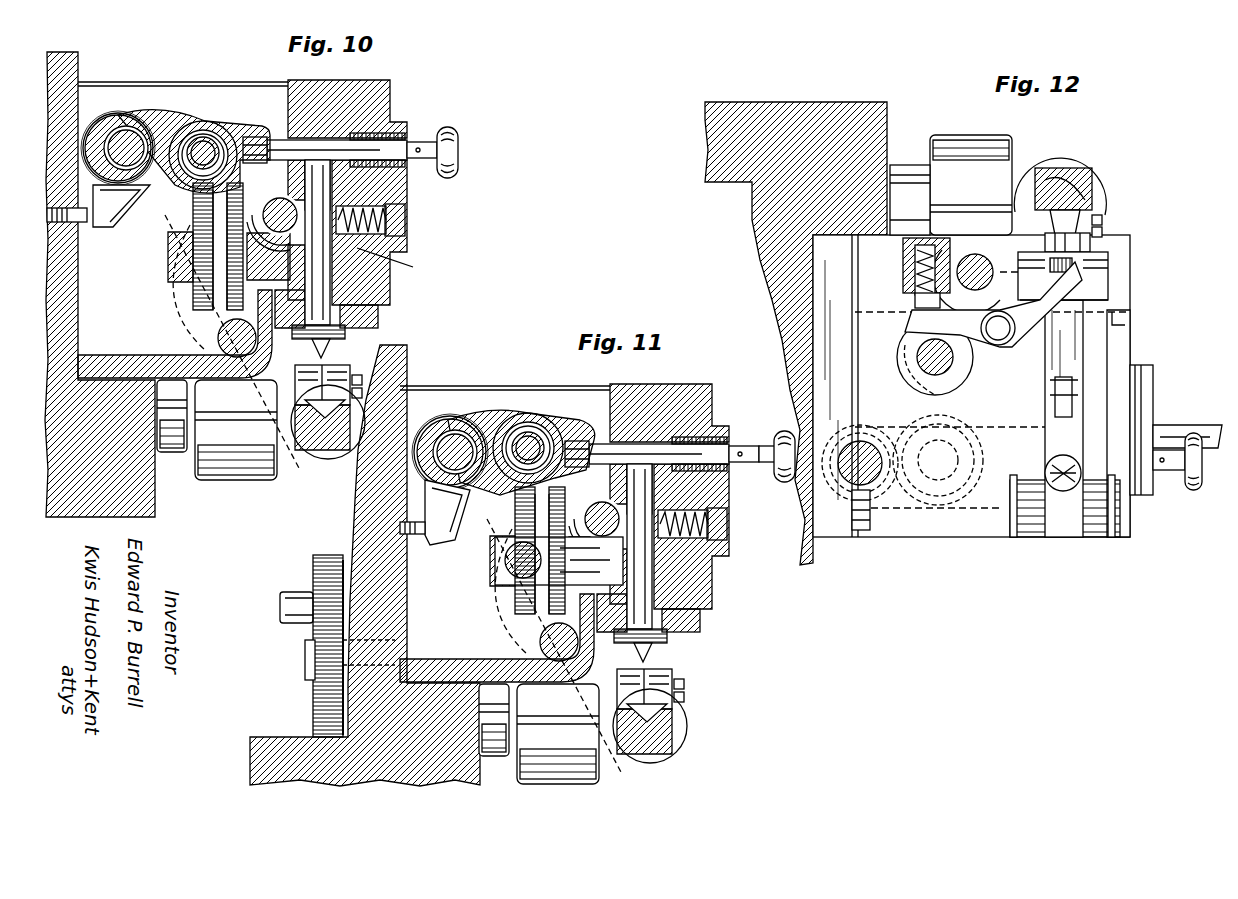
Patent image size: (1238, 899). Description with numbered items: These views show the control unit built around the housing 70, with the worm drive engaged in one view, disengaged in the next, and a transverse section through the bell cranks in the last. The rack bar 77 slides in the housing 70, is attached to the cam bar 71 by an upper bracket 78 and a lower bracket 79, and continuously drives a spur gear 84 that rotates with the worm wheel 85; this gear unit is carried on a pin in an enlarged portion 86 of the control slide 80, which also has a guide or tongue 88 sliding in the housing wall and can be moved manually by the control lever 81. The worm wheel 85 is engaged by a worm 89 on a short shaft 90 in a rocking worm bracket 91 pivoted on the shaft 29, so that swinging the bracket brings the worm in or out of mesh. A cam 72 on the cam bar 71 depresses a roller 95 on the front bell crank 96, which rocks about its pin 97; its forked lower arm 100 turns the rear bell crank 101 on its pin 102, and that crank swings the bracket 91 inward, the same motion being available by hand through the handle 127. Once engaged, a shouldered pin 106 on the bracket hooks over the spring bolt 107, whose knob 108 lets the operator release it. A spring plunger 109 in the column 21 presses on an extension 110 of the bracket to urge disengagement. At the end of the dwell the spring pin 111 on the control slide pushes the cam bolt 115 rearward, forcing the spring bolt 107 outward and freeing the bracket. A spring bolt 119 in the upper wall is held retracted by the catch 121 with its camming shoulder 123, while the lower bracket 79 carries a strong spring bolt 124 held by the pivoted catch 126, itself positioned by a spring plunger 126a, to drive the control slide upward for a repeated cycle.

In FIG. 10, the column 21 is at (150, 505).
In FIG. 11, the column 21 is at (365, 500).
In FIG. 12, the column 21 is at (878, 128).
In FIG. 10, the shaft 29 is at (105, 128).
In FIG. 11, the shaft 29 is at (440, 435).
In FIG. 12, the shaft 29 is at (870, 490).
In FIG. 10, the housing 70 is at (385, 98).
In FIG. 11, the housing 70 is at (668, 390).
In FIG. 12, the housing 70 is at (1118, 345).
In FIG. 10, the cam bar 71 is at (303, 455).
In FIG. 11, the cam bar 71 is at (685, 752).
In FIG. 12, the cam bar 71 is at (1092, 175).
In FIG. 12, the cam 72 is at (1100, 215).
In FIG. 10, the rack bar 77 is at (218, 340).
In FIG. 11, the rack bar 77 is at (540, 650).
In FIG. 12, the rack bar 77 is at (972, 255).
In FIG. 12, the bracket 78 is at (1062, 162).
In FIG. 10, the bracket 79 is at (332, 452).
In FIG. 11, the bracket 79 is at (695, 718).
In FIG. 11, the control slide 80 is at (515, 568).
In FIG. 12, the control lever 81 is at (1208, 428).
In FIG. 10, the spur gear 84 is at (245, 205).
In FIG. 11, the spur gear 84 is at (560, 520).
In FIG. 10, the worm wheel 85 is at (228, 300).
In FIG. 11, the worm wheel 85 is at (548, 605).
In FIG. 10, the enlarged portion 86 is at (193, 262).
In FIG. 11, the enlarged portion 86 is at (505, 548).
In FIG. 10, the guide or tongue 88 is at (370, 277).
In FIG. 11, the guide or tongue 88 is at (700, 585).
In FIG. 10, the worm 89 is at (190, 140).
In FIG. 11, the worm 89 is at (518, 420).
In FIG. 10, the short shaft 90 is at (195, 168).
In FIG. 11, the short shaft 90 is at (518, 462).
In FIG. 10, the worm bracket 91 is at (150, 115).
In FIG. 11, the worm bracket 91 is at (475, 420).
In FIG. 12, the worm bracket 91 is at (900, 500).
In FIG. 12, the roller 95 is at (1085, 245).
In FIG. 12, the front bell crank 96 is at (1085, 320).
In FIG. 12, the pin 97 is at (1110, 285).
In FIG. 12, the forked lower arm 100 is at (1055, 385).
In FIG. 12, the rear bell crank 101 is at (1075, 440).
In FIG. 12, the pin 102 is at (1120, 510).
In FIG. 10, the shouldered pin 106 is at (258, 130).
In FIG. 11, the shouldered pin 106 is at (580, 440).
In FIG. 10, the spring bolt 107 is at (270, 136).
In FIG. 11, the spring bolt 107 is at (612, 455).
In FIG. 10, the knob 108 is at (455, 150).
In FIG. 11, the knob 108 is at (775, 440).
In FIG. 12, the knob 108 is at (1203, 468).
In FIG. 10, the spring plunger 109 is at (80, 225).
In FIG. 11, the spring plunger 109 is at (412, 540).
In FIG. 10, the extension 110 is at (120, 215).
In FIG. 11, the extension 110 is at (450, 522).
In FIG. 10, the spring pin 111 is at (340, 362).
In FIG. 11, the spring pin 111 is at (660, 595).
In FIG. 10, the cam bolt 115 is at (325, 187).
In FIG. 11, the cam bolt 115 is at (655, 486).
In FIG. 10, the spring bolt 119 is at (269, 233).
In FIG. 11, the spring bolt 119 is at (590, 542).
In FIG. 10, the catch 121 is at (345, 213).
In FIG. 10, the camming shoulder 123 is at (398, 261).
In FIG. 12, the spring bolt 124 is at (918, 367).
In FIG. 12, the pivoted catch 126 is at (985, 345).
In FIG. 12, the spring plunger 126a is at (915, 305).
In FIG. 12, the handle 127 is at (1078, 470).